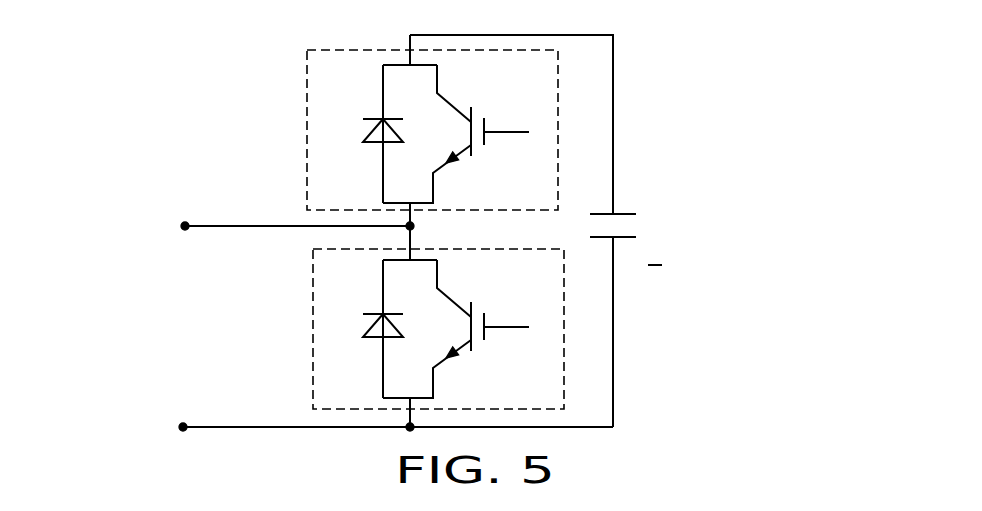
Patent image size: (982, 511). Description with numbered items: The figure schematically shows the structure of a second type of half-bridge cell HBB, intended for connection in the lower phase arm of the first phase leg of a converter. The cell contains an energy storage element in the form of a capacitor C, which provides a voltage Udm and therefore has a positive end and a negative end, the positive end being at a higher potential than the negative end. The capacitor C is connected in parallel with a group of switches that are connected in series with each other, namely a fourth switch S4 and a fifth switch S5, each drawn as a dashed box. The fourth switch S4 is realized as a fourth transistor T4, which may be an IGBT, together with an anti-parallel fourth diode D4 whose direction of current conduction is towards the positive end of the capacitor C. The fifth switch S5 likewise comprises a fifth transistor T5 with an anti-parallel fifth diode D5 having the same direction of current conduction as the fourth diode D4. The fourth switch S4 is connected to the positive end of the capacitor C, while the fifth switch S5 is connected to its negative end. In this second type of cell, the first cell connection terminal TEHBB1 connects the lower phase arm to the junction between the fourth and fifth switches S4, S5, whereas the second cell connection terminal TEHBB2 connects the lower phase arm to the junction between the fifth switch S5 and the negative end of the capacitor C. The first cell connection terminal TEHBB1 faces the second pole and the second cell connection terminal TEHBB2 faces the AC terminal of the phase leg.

The second type of half-bridge cell HBB is at (636, 143).
The fourth switch S4 is at (307, 116).
The fifth switch S5 is at (313, 338).
The fourth anti-parallel diode D4 is at (366, 134).
The fifth anti-parallel diode D5 is at (362, 329).
The fourth transistor T4 is at (481, 134).
The fifth transistor T5 is at (482, 329).
The capacitor C is at (598, 222).
The voltage Udm is at (673, 219).
The first cell connection terminal TEHBB1 is at (224, 221).
The second cell connection terminal TEHBB2 is at (314, 416).